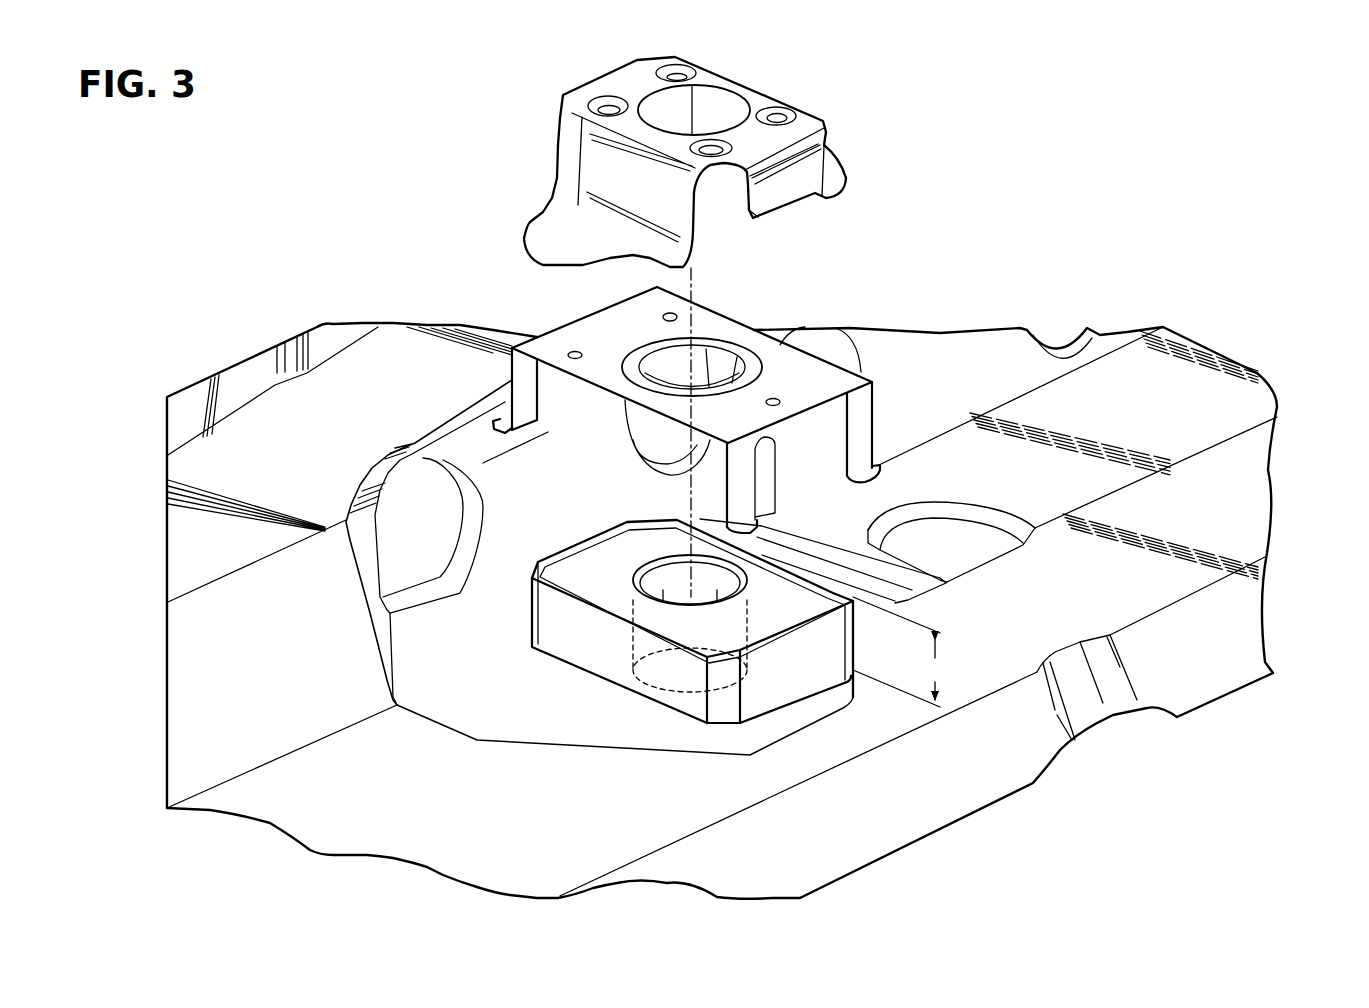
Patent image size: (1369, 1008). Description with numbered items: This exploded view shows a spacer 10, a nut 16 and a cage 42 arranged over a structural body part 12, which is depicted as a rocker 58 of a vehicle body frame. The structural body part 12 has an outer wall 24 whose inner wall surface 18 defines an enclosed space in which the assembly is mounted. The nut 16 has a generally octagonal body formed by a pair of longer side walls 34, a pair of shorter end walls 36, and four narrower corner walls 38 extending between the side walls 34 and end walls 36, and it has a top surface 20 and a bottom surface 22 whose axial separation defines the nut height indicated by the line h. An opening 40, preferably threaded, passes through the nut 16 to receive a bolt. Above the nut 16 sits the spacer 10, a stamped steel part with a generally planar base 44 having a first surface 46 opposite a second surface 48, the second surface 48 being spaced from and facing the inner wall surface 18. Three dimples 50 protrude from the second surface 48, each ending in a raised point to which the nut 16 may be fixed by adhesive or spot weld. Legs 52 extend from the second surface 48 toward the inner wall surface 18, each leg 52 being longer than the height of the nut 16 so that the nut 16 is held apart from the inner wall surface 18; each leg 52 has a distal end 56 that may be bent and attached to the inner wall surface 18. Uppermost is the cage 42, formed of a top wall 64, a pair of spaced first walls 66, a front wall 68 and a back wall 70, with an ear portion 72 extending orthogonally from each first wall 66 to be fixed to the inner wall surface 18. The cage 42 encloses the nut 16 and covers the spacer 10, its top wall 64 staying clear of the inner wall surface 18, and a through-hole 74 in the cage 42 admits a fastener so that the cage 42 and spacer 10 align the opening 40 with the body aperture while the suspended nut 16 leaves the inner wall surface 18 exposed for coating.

The spacer 10 is at (668, 396).
The structural body part 12 is at (1070, 137).
The nut 16 is at (750, 582).
The inner wall surface 18 is at (525, 716).
The top surface 20 is at (586, 578).
The bottom surface 22 is at (736, 660).
The outer wall 24 is at (1250, 325).
The side walls 34 is at (571, 644).
The end walls 36 is at (781, 678).
The corner walls 38 is at (846, 640).
The opening 40 is at (728, 574).
The cage 42 is at (691, 142).
The base 44 is at (791, 391).
The first surface 46 is at (717, 324).
The second surface 48 is at (593, 386).
The dimple 50 is at (668, 314).
The leg 52 is at (518, 375).
The distal end 56 is at (500, 432).
The rocker 58 is at (1292, 456).
The top wall 64 is at (707, 77).
The first walls 66 is at (823, 117).
The front wall 68 is at (798, 188).
The back wall 70 is at (563, 100).
The ear portion 72 is at (840, 162).
The through-hole 74 is at (667, 97).